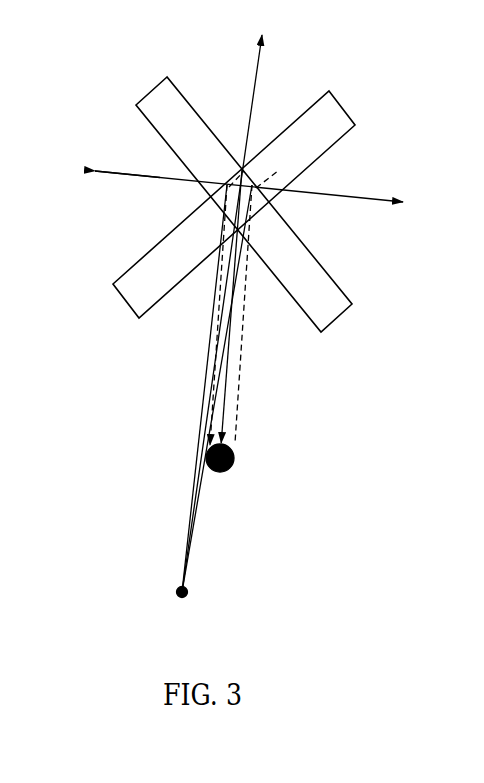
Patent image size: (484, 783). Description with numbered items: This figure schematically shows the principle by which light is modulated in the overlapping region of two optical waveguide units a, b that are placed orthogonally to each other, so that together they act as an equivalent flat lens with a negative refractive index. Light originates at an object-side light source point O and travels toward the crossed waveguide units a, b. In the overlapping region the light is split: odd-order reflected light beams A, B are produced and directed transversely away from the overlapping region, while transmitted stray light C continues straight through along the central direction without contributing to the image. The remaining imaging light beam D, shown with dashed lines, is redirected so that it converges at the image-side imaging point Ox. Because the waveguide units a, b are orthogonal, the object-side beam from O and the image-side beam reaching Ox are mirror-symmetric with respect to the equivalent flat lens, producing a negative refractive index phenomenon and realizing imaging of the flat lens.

The odd-order reflected light beam A is at (249, 208).
The odd-order reflected light beam B is at (90, 171).
The transmitted stray light C is at (239, 313).
The imaging light beam D is at (227, 388).
The optical waveguide unit a is at (234, 204).
The optical waveguide unit b is at (244, 204).
The object-side light source point O is at (202, 398).
The image-side imaging point Ox is at (240, 322).